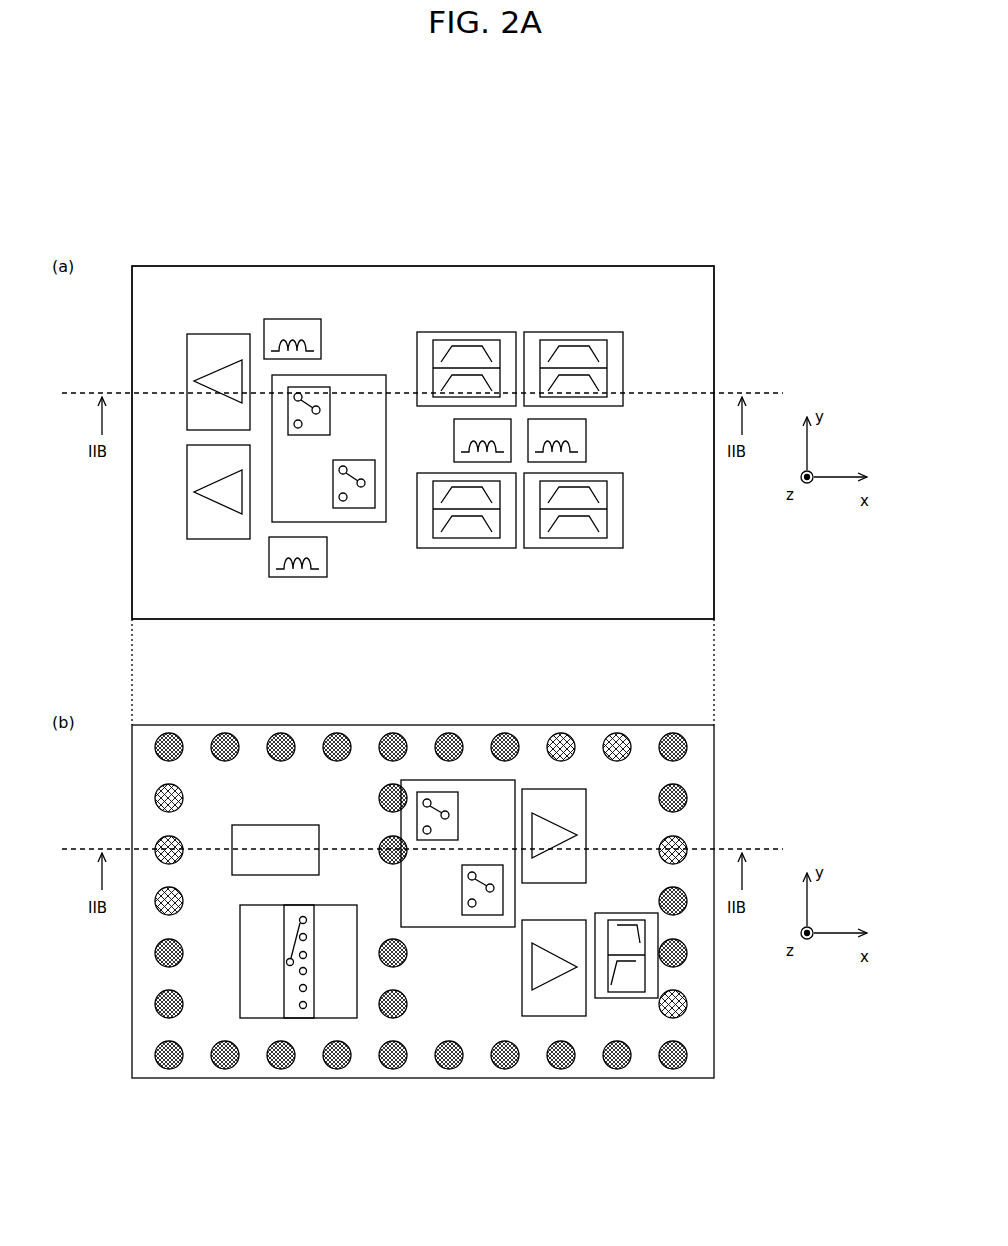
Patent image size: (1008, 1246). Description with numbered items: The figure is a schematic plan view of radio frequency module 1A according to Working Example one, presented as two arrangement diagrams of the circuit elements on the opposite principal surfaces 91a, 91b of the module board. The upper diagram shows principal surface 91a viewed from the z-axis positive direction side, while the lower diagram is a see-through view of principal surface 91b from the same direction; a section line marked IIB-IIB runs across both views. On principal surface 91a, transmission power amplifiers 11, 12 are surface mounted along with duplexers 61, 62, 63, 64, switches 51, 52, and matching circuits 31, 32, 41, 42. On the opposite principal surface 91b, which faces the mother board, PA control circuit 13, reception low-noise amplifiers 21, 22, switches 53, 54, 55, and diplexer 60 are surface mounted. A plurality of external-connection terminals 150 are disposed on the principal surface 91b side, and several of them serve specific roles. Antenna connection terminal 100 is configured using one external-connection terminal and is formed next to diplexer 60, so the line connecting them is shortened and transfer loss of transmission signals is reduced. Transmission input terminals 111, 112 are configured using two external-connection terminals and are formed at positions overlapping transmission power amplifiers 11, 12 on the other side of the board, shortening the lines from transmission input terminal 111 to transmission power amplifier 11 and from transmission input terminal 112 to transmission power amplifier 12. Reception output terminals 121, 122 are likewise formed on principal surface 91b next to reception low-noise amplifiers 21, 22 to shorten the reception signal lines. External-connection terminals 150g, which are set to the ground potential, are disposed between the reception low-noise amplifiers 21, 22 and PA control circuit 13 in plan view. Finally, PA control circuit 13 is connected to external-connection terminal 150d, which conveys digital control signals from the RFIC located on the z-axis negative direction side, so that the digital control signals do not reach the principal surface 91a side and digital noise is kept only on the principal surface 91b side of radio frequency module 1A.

The radio frequency module 1A is at (793, 295).
The transmission power amplifier 11 is at (203, 333).
The transmission power amplifier 12 is at (205, 541).
The PA control circuit 13 is at (240, 825).
The reception low-noise amplifier 21 is at (562, 789).
The reception low-noise amplifier 22 is at (540, 1016).
The matching circuit 31 is at (300, 320).
The matching circuit 32 is at (300, 578).
The matching circuit 41 is at (454, 440).
The matching circuit 42 is at (586, 440).
The switch 51 is at (330, 425).
The switch 52 is at (333, 478).
The switch 53 is at (458, 830).
The switch 54 is at (462, 878).
The switch 55 is at (240, 925).
The diplexer 60 is at (616, 998).
The duplexer 61 is at (458, 332).
The duplexer 62 is at (563, 332).
The duplexer 63 is at (455, 548).
The duplexer 64 is at (560, 548).
The principal surface 91a is at (714, 286).
The principal surface 91b is at (714, 745).
The antenna connection terminal 100 is at (688, 1001).
The transmission input terminal 111 is at (160, 790).
The transmission input terminal 112 is at (160, 912).
The reception output terminal 121 is at (563, 735).
The reception output terminal 122 is at (620, 735).
The external-connection terminal 150 is at (688, 845).
The external-connection terminal 150d is at (160, 843).
The external-connection terminal 150g is at (370, 843).